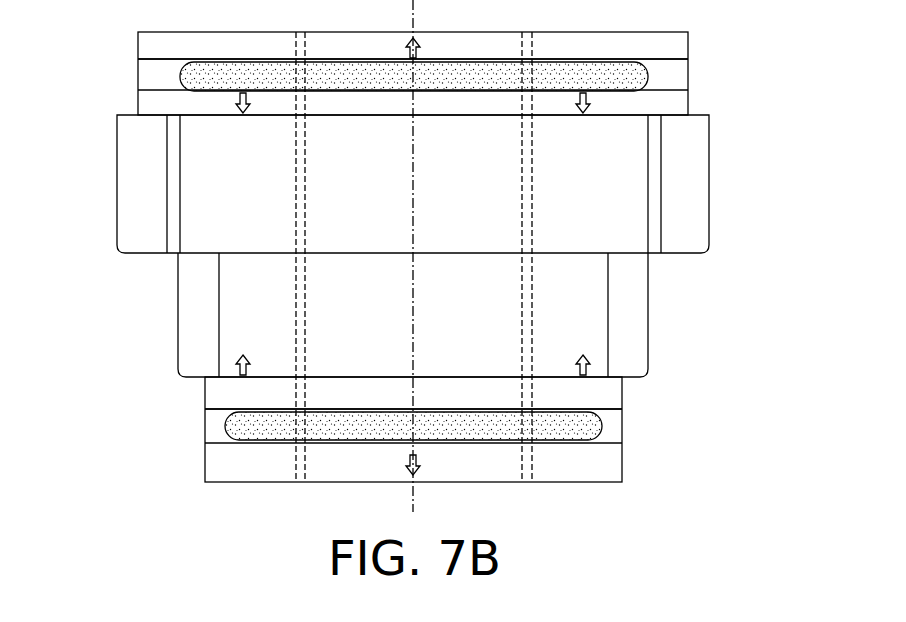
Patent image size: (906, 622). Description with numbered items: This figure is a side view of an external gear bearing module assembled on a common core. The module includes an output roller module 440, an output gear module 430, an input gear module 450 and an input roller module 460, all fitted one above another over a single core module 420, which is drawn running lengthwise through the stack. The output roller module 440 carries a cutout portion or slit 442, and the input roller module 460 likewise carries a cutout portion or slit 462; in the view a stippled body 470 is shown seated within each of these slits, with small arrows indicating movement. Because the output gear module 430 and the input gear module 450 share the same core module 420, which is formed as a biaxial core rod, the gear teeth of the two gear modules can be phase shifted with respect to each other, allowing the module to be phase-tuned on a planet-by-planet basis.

The core module 420 is at (296, 187).
The output gear module 430 is at (710, 188).
The output roller module 440 is at (677, 44).
The cutout portion or slit 442 is at (675, 76).
The input gear module 450 is at (645, 312).
The input roller module 460 is at (205, 391).
The cutout portion or slit 462 is at (205, 427).
The elastic member 470 is at (178, 78).